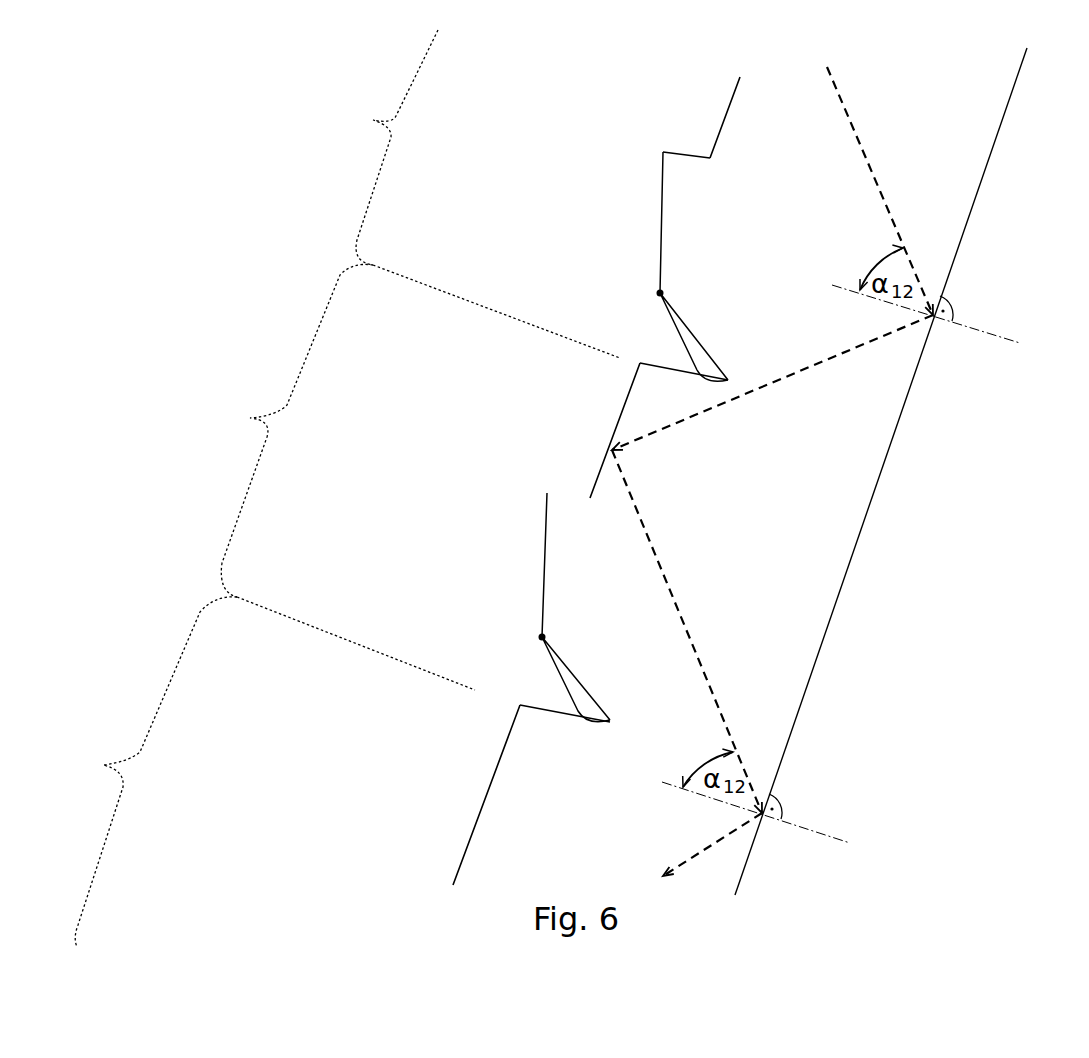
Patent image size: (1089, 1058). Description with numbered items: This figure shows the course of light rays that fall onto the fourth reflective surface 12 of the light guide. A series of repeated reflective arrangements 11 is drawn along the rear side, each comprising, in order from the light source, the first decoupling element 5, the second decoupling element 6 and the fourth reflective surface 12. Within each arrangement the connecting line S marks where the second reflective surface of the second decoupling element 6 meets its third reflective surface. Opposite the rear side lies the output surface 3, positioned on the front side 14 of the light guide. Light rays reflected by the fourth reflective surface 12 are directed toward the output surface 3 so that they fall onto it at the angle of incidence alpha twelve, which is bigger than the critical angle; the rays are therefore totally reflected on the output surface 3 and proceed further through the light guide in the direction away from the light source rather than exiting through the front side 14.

The output surface 3 is at (973, 210).
The first decoupling element 5 is at (653, 157).
The second decoupling element 6 is at (660, 253).
The reflective arrangement 11 is at (335, 488).
The fourth reflective surface 12 is at (723, 120).
The front side 14 is at (903, 470).
The connecting line S is at (663, 294).